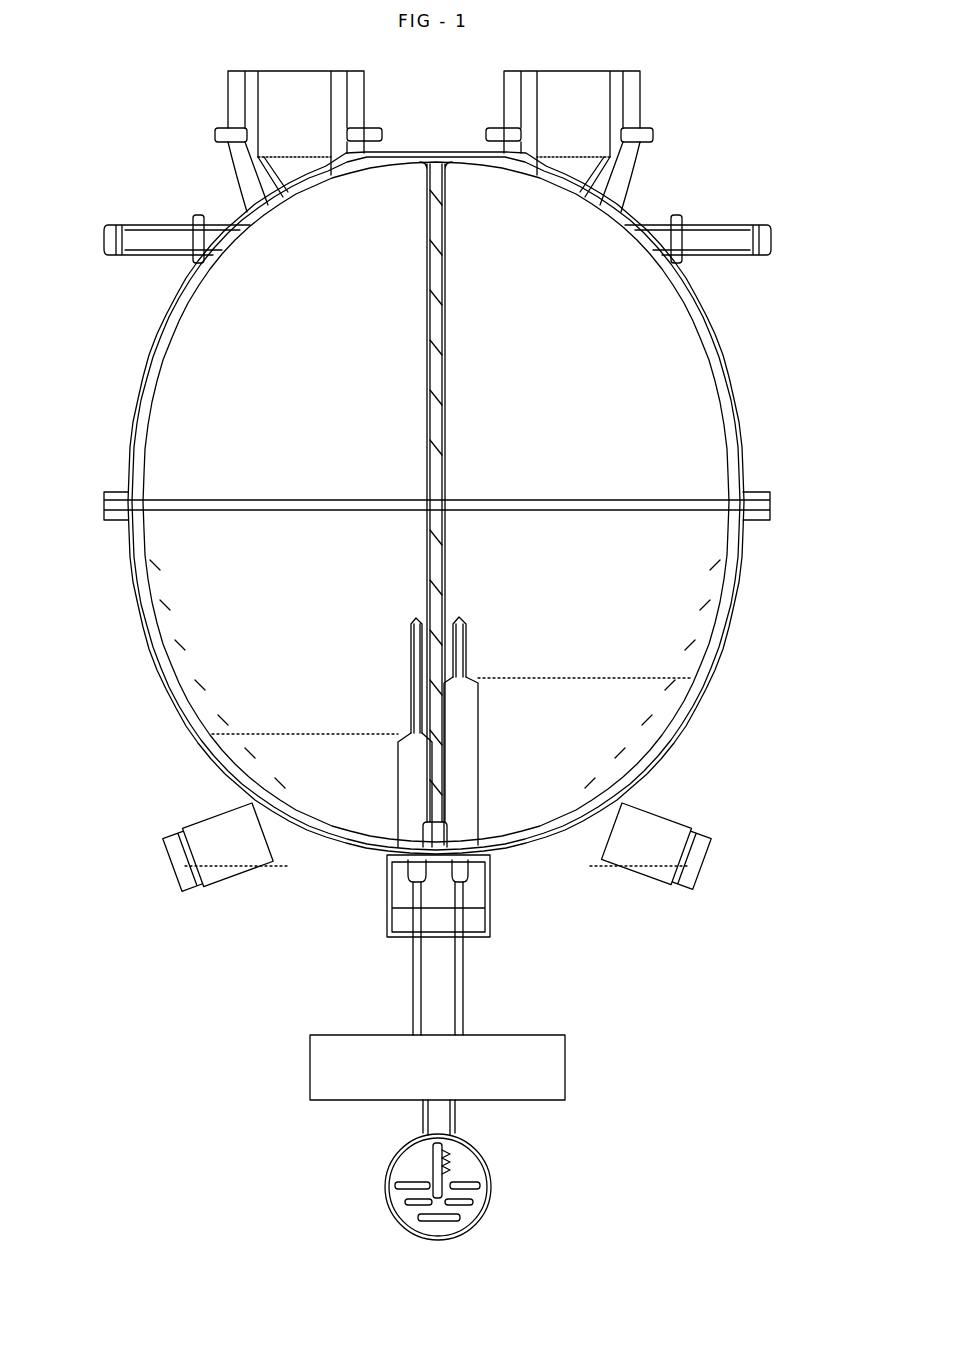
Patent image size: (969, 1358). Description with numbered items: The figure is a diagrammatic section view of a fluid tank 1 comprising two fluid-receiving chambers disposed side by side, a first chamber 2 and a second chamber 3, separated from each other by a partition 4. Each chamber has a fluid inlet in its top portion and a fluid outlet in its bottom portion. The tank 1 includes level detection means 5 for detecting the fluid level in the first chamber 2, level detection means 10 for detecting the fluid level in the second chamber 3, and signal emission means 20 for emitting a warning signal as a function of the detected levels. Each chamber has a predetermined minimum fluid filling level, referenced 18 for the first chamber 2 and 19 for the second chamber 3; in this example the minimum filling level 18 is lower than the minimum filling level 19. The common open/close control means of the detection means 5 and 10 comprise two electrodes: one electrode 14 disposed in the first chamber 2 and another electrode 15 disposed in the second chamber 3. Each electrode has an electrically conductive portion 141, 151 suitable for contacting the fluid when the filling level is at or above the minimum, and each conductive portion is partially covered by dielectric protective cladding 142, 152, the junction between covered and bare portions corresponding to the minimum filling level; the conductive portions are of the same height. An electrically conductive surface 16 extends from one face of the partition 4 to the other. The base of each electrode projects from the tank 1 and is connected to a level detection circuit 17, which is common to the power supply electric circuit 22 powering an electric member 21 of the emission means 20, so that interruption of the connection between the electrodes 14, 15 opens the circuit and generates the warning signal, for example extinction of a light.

The fluid tank 1 is at (738, 353).
The first chamber 2 is at (170, 573).
The second chamber 3 is at (703, 562).
The partition 4 is at (427, 312).
The level detection means 5 is at (393, 828).
The level detection means 10 is at (485, 717).
The electrode 14 is at (238, 732).
The electrically conductive portion 141 is at (410, 625).
The dielectric protective cladding 142 is at (398, 768).
The electrode 15 is at (636, 712).
The electrically conductive portion 151 is at (470, 630).
The dielectric protective cladding 152 is at (479, 808).
The electrically conductive surface 16 is at (515, 857).
The level detection circuit 17 is at (463, 1003).
The minimum fluid filling level 18 is at (247, 736).
The minimum fluid filling level 19 is at (673, 678).
The signal emission means 20 is at (360, 1138).
The electric member 21 is at (493, 1187).
The power supply electric circuit 22 is at (455, 1120).